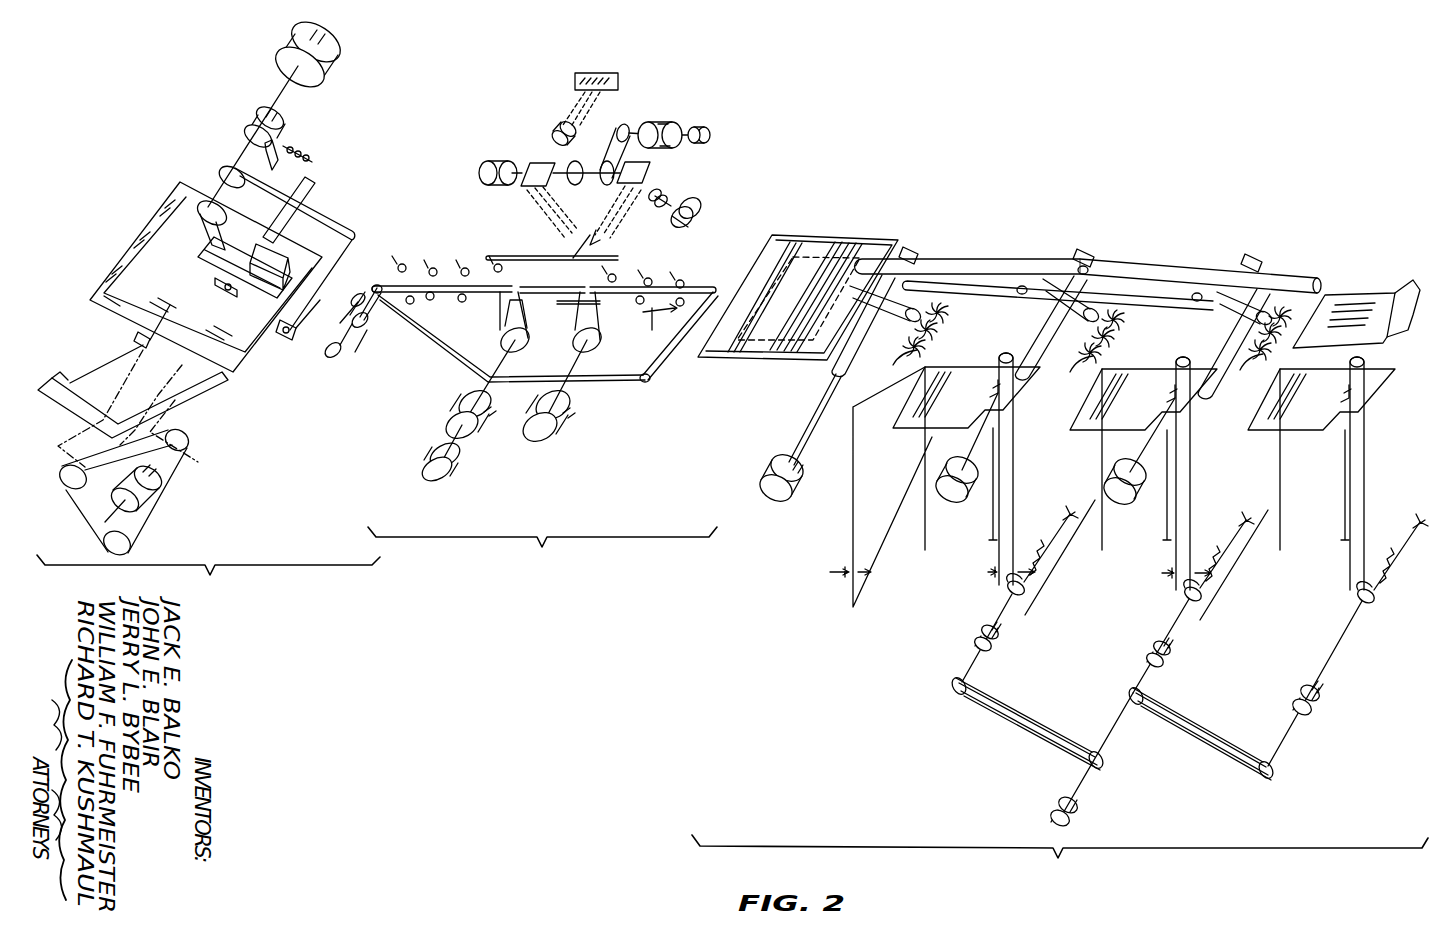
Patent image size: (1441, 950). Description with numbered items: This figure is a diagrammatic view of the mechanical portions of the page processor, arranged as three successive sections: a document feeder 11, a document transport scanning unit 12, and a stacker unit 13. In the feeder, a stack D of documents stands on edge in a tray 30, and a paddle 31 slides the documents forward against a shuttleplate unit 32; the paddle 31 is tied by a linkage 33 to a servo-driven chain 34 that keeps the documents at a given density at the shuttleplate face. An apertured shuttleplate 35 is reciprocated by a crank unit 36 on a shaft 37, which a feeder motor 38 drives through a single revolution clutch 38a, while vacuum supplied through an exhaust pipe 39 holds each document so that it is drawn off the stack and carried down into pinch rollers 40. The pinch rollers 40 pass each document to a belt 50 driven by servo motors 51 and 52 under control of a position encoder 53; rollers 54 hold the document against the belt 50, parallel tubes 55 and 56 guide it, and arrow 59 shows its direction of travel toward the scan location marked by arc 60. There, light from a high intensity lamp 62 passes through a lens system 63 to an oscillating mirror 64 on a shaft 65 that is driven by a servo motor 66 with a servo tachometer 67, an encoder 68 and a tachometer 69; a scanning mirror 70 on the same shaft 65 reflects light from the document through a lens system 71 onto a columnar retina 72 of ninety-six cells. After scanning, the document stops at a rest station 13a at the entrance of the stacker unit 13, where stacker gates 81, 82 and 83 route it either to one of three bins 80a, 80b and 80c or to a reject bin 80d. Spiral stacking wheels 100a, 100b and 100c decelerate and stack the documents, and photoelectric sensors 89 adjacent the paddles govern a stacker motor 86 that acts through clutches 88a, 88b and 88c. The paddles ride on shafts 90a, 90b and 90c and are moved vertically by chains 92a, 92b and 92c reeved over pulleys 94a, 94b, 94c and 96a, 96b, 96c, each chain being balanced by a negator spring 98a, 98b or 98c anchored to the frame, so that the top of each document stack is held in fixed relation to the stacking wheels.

The stack of documents D is at (176, 182).
The document feeder 11 is at (208, 578).
The document transport scanning unit 12 is at (542, 550).
The stacker unit 13 is at (1060, 860).
The rest station 13a is at (818, 236).
The tray 30 is at (205, 404).
The paddle 31 is at (133, 338).
The shuttleplate unit 32 is at (212, 285).
The linkage 33 is at (125, 395).
The chain 34 is at (160, 478).
The shuttleplate 35 is at (205, 248).
The crank unit 36 is at (205, 200).
The shaft 37 is at (240, 156).
The feeder motor 38 is at (330, 62).
The single revolution clutch 38a is at (255, 125).
The exhaust pipe 39 is at (318, 186).
The pinch rollers 40 is at (282, 345).
The belt 50 is at (550, 300).
The servo motor 51 is at (445, 420).
The servo motor 52 is at (560, 420).
The position encoder 53 is at (418, 467).
The rollers 54 is at (404, 265).
The tube 55 is at (527, 255).
The tube 56 is at (598, 305).
The arrow 59 is at (657, 330).
The arc 60 is at (582, 242).
The high intensity lamp 62 is at (696, 212).
The lens system 63 is at (664, 192).
The oscillating mirror 64 is at (652, 165).
The shaft 65 is at (600, 183).
The servo motor 66 is at (662, 122).
The servo tachometer 67 is at (700, 126).
The encoder 68 is at (578, 162).
The tachometer 69 is at (485, 165).
The scanning mirror 70 is at (533, 162).
The lens system 71 is at (553, 128).
The columnar retina 72 is at (597, 72).
The bin 80a is at (955, 380).
The bin 80b is at (1133, 382).
The bin 80c is at (1310, 432).
The reject bin 80d is at (1370, 290).
The stacker gate 81 is at (916, 252).
The stacker gate 82 is at (1088, 251).
The stacker gate 83 is at (1258, 256).
The stacker motor 86 is at (1052, 812).
The clutch 88a is at (974, 640).
The clutch 88b is at (1146, 656).
The clutch 88c is at (1296, 700).
The photoelectric sensors 89 is at (840, 572).
The shaft 90a is at (990, 532).
The shaft 90b is at (1164, 532).
The shaft 90c is at (1342, 532).
The chain 92a is at (1016, 453).
The chain 92b is at (1193, 453).
The chain 92c is at (1367, 454).
The pulley 94a is at (1012, 365).
The pulley 94b is at (1188, 370).
The pulley 94c is at (1365, 368).
The pulley 96a is at (1008, 590).
The pulley 96b is at (1184, 595).
The pulley 96c is at (1357, 596).
The negator spring 98a is at (1040, 540).
The negator spring 98b is at (1217, 542).
The negator spring 98c is at (1391, 542).
The stacking wheel 100a is at (948, 320).
The stacking wheel 100b is at (1124, 322).
The stacking wheel 100c is at (1290, 310).